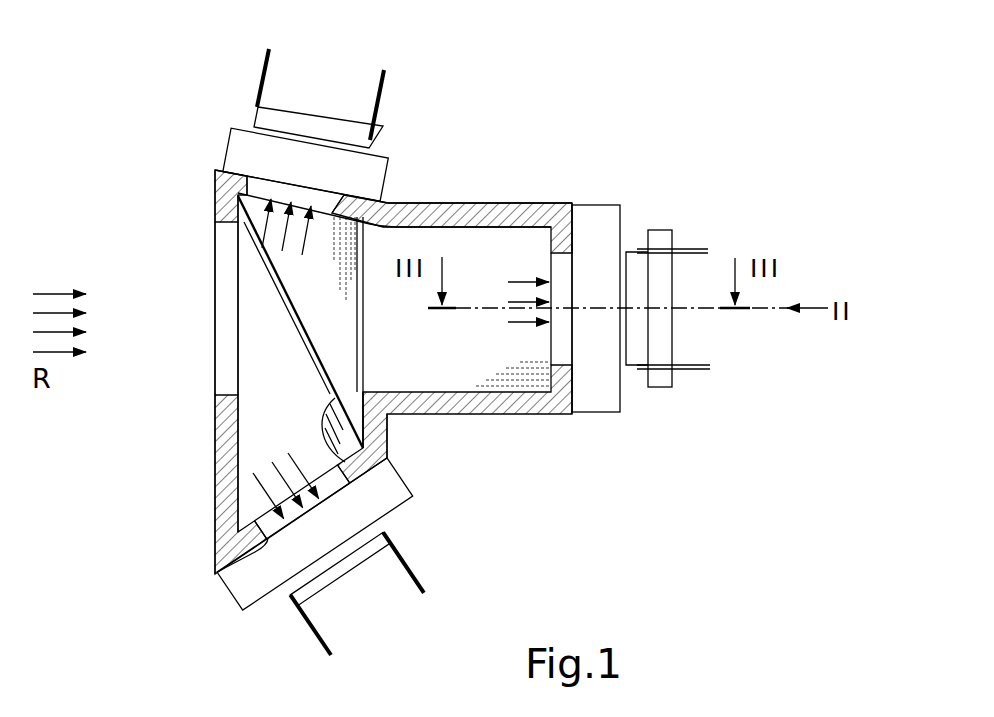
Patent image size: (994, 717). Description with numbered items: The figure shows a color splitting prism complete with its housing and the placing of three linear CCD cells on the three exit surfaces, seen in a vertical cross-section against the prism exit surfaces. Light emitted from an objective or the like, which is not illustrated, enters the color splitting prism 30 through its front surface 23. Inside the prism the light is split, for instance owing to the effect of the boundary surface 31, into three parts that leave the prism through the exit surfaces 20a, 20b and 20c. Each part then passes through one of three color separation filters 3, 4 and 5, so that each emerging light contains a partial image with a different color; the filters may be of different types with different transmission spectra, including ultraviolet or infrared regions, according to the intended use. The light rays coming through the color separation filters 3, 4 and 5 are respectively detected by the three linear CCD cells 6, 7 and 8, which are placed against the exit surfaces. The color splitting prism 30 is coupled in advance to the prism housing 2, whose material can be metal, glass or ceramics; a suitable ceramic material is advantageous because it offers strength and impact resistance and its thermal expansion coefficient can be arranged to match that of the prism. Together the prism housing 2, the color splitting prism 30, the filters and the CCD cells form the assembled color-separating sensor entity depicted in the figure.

The prism housing 2 is at (470, 212).
The color separation filter 3 is at (240, 146).
The color separation filter 4 is at (592, 218).
The color separation filter 5 is at (257, 600).
The linear CCD cell 6 is at (263, 118).
The linear CCD cell 7 is at (637, 343).
The linear CCD cell 8 is at (367, 551).
The exit surface 20a is at (555, 352).
The exit surface 20b is at (258, 578).
The exit surface 20c is at (342, 205).
The front surface 23 is at (236, 332).
The color splitting prism 30 is at (255, 414).
The boundary surface 31 is at (347, 452).